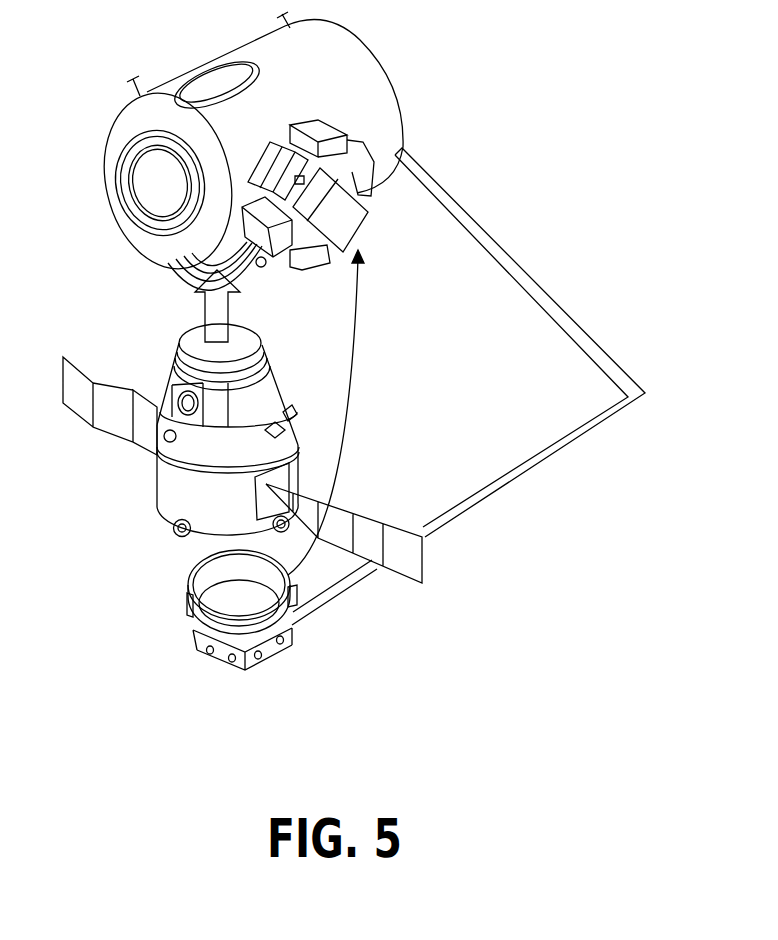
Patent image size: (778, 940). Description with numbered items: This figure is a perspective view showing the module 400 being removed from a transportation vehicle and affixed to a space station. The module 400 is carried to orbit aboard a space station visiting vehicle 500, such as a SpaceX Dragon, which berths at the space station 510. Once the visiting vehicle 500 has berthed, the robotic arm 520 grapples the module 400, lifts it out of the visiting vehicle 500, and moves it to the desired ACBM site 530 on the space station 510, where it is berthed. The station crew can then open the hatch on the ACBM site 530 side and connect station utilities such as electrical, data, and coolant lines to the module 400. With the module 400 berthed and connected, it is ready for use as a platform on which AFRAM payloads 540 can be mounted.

The module 400 is at (148, 683).
The space station visiting vehicle 500 is at (240, 463).
The space station 510 is at (333, 97).
The robotic arm 520 is at (463, 513).
The ACBM site 530 is at (252, 181).
The AFRAM payloads 540 is at (342, 197).